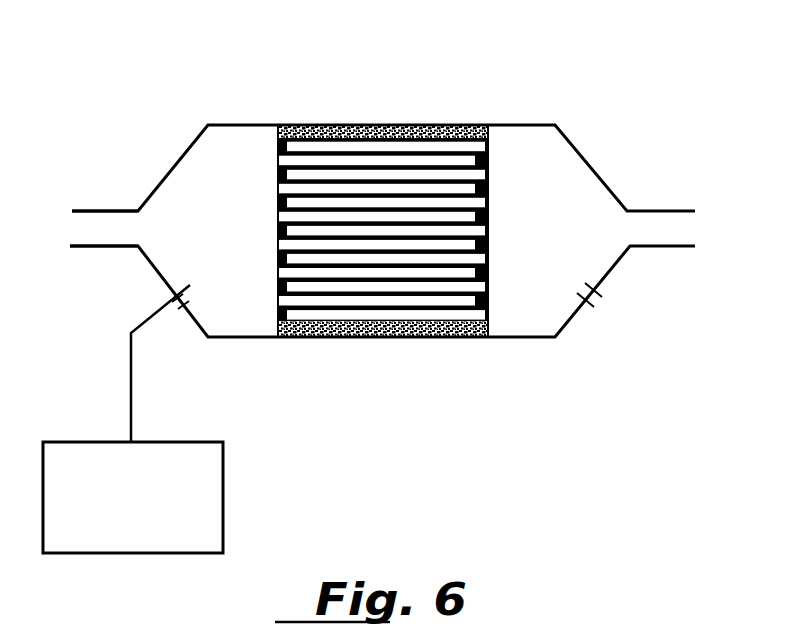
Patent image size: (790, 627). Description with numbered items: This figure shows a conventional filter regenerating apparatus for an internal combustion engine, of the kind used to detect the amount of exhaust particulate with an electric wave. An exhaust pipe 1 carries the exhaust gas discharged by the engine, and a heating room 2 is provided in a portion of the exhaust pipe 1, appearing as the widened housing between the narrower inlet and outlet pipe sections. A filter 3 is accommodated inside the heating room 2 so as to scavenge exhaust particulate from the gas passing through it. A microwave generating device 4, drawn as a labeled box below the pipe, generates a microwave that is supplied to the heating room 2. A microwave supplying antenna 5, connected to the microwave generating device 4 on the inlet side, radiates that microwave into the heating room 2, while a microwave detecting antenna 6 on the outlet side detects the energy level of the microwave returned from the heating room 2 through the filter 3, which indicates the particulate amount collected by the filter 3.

The exhaust pipe 1 is at (110, 211).
The heating room 2 is at (516, 124).
The filter 3 is at (423, 285).
The microwave generating device 4 is at (213, 508).
The microwave supplying antenna 5 is at (182, 285).
The microwave detecting antenna 6 is at (572, 293).